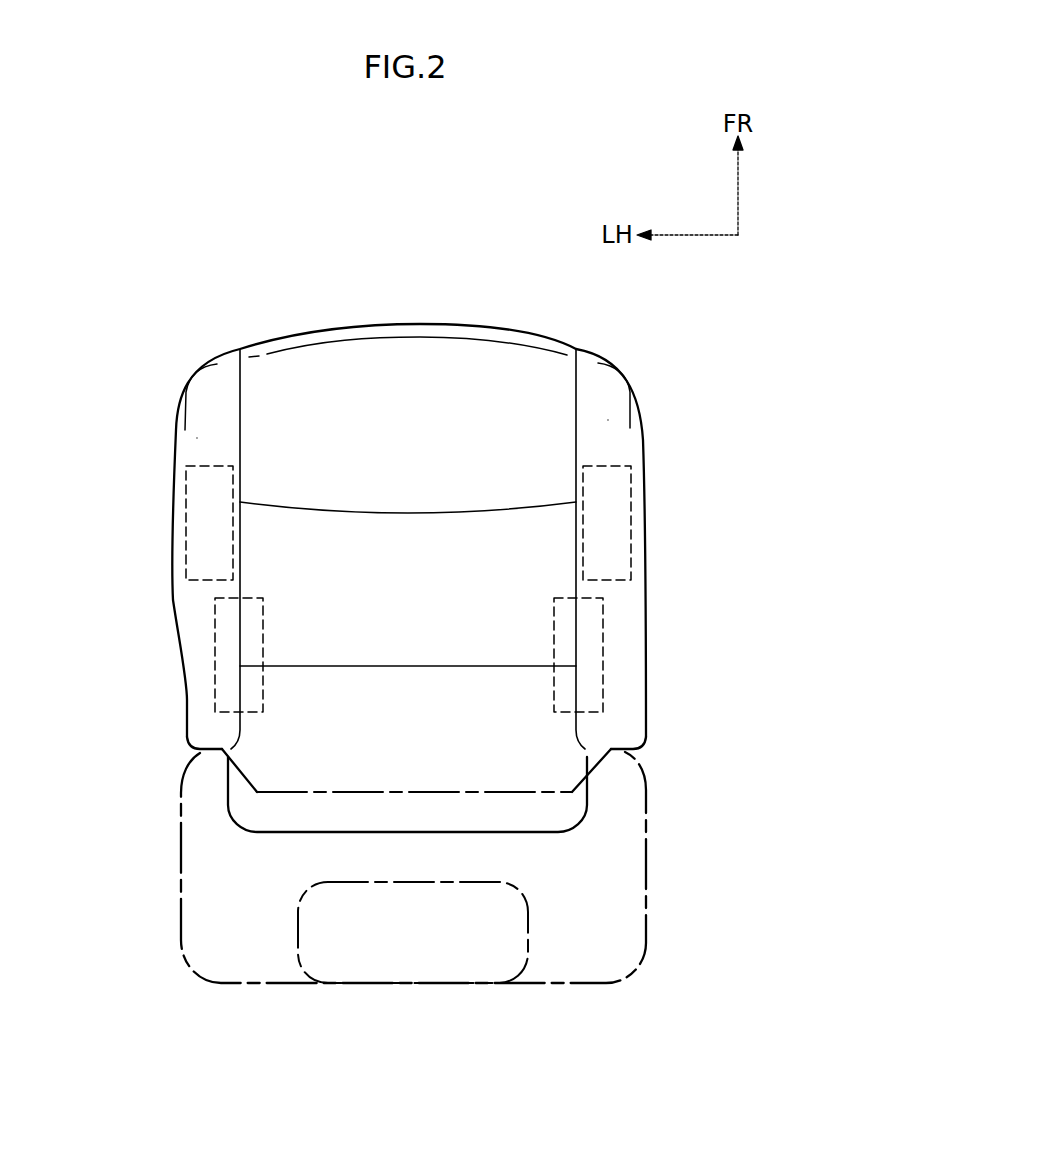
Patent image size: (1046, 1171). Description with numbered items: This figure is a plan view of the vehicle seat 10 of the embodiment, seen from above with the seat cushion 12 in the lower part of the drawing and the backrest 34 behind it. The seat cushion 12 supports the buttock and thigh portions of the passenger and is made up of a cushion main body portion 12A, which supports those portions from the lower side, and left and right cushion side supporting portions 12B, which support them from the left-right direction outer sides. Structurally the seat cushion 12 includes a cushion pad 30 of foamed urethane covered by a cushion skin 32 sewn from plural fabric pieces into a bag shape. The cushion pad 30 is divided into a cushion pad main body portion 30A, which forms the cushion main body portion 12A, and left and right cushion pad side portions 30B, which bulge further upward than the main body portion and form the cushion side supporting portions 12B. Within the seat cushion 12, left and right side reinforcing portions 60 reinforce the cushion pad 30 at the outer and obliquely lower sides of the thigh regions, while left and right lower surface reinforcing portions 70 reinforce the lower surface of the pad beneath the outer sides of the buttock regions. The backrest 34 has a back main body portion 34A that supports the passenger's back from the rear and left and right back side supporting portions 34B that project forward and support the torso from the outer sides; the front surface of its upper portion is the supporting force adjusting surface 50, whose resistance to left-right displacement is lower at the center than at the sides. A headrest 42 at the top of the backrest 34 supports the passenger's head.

The vehicle seat 10 is at (432, 223).
The seat cushion 12 is at (172, 597).
The cushion main body portion 12A is at (400, 440).
The cushion side supporting portion 12B is at (203, 400).
The cushion pad 30 is at (464, 372).
The cushion pad main body portion 30A is at (366, 440).
The cushion pad side portion 30B is at (197, 438).
The cushion skin 32 is at (506, 372).
The backrest 34 is at (181, 880).
The back main body portion 34A is at (403, 790).
The back side supporting portion 34B is at (242, 768).
The headrest 42 is at (433, 985).
The supporting force adjusting surface 50 is at (383, 860).
The side reinforcing portion 60 is at (186, 525).
The lower surface reinforcing portion 70 is at (215, 655).